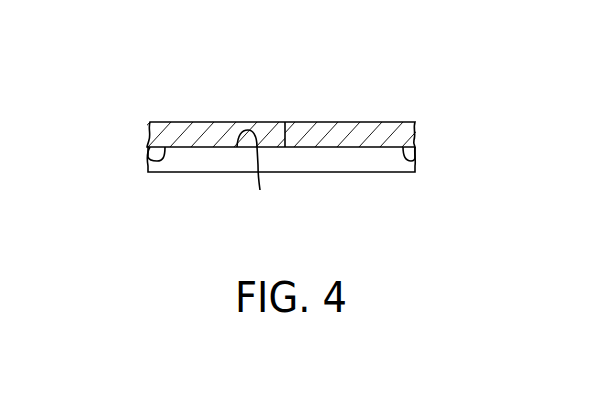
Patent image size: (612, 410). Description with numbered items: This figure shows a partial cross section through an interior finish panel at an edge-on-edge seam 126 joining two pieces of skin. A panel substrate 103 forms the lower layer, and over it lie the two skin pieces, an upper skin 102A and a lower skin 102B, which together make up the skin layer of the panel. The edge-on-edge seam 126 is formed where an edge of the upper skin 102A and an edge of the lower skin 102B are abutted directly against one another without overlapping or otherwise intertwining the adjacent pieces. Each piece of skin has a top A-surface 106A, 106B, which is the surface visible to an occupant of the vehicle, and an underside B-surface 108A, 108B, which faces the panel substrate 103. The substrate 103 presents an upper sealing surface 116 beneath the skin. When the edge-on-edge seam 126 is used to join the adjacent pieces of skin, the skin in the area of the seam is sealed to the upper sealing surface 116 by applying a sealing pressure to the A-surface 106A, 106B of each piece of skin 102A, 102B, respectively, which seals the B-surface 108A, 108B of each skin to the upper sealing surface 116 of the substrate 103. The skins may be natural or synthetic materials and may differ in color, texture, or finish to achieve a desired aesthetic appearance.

The upper skin 102A is at (407, 107).
The lower skin 102B is at (163, 107).
The substrate 103 is at (353, 175).
The A-surface 106A is at (370, 122).
The A-surface 106B is at (192, 122).
The B-surface 108A is at (411, 161).
The B-surface 108B is at (152, 161).
The upper sealing surface 116 is at (257, 174).
The edge-on-edge seam 126 is at (285, 122).